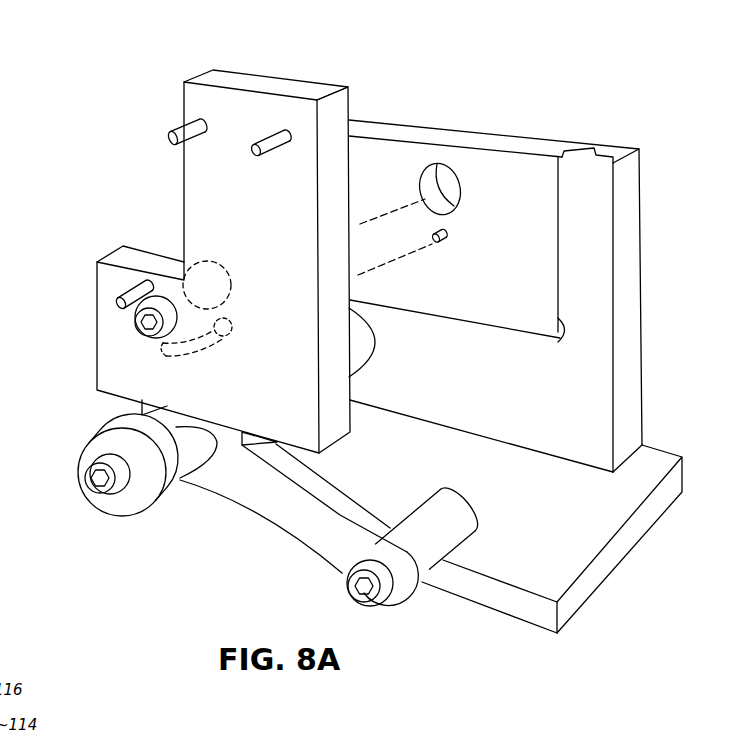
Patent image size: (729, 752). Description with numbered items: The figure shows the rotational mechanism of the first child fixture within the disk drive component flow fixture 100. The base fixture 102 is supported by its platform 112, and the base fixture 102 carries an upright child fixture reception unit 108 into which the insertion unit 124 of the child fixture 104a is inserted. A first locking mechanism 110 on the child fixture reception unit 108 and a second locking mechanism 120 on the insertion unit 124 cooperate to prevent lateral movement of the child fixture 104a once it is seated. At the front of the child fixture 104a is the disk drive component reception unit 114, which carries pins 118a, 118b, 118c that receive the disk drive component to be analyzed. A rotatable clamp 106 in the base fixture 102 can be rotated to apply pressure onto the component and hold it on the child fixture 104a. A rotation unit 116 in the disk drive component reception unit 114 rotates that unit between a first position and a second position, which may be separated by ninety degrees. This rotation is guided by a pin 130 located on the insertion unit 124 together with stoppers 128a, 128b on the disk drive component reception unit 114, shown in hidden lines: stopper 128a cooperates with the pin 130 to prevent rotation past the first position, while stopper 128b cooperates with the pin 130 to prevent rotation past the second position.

The disk drive component flow fixture 100 is at (636, 101).
The base fixture 102 is at (655, 457).
The child fixture 104a is at (340, 82).
The rotatable clamp 106 is at (240, 474).
The child fixture reception unit 108 is at (627, 260).
The first locking mechanism 110 is at (582, 148).
The platform 112 is at (484, 611).
The disk drive component reception unit 114 is at (353, 108).
The rotation unit 116 is at (147, 337).
The pin 118a is at (187, 126).
The pin 118b is at (262, 156).
The pin 118c is at (116, 301).
The second locking mechanism 120 is at (610, 156).
The insertion unit 124 is at (427, 132).
The stopper 128a is at (165, 348).
The stopper 128b is at (222, 336).
The pin 130 is at (446, 239).